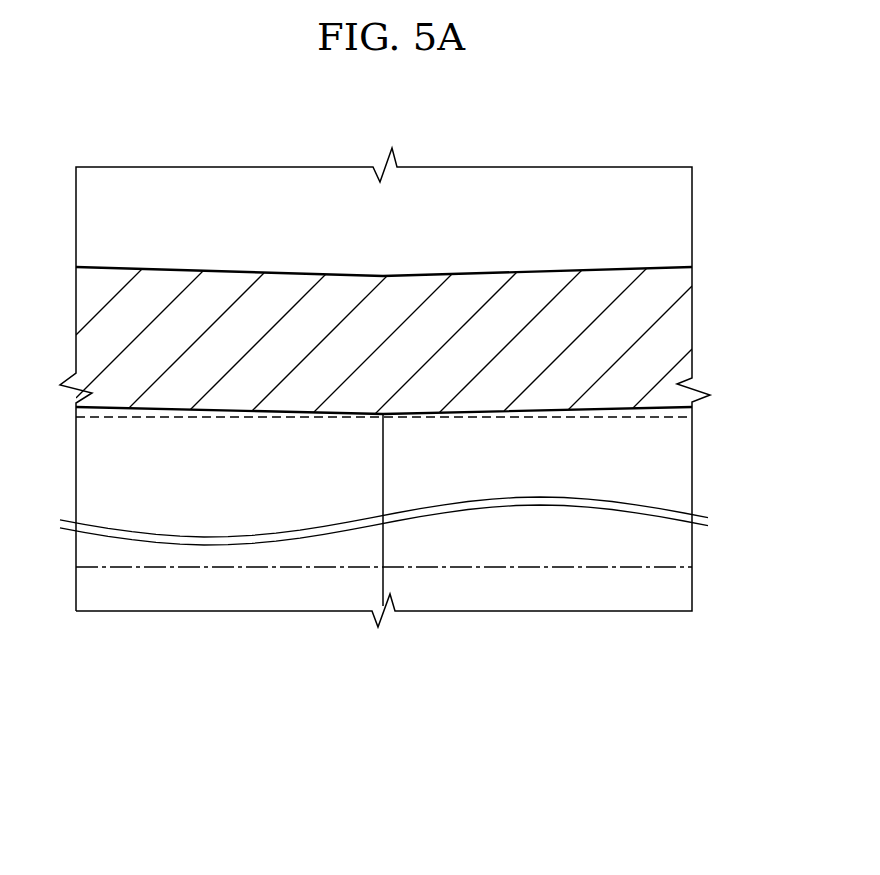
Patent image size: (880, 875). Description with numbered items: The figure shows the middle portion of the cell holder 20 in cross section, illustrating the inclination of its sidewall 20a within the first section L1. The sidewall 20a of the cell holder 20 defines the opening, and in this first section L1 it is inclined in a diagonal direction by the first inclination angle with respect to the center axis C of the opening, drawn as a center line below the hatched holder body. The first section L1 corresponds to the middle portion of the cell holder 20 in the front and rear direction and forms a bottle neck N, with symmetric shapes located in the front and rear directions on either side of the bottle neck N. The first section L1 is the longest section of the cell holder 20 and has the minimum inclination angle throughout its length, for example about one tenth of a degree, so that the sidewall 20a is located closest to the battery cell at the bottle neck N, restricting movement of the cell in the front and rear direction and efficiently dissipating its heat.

The cell holder 20 is at (510, 303).
The sidewall 20a is at (650, 409).
The bottle neck N is at (380, 270).
The center axis C is at (660, 567).
The first section L1 is at (692, 690).